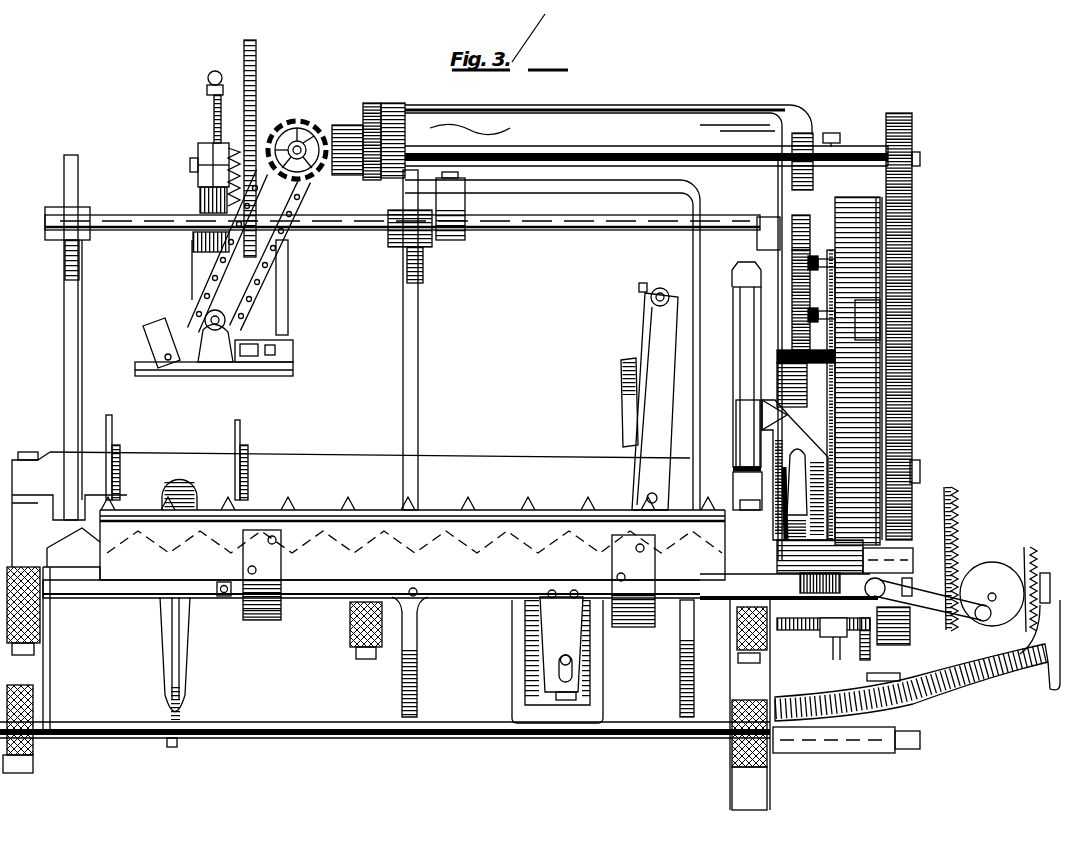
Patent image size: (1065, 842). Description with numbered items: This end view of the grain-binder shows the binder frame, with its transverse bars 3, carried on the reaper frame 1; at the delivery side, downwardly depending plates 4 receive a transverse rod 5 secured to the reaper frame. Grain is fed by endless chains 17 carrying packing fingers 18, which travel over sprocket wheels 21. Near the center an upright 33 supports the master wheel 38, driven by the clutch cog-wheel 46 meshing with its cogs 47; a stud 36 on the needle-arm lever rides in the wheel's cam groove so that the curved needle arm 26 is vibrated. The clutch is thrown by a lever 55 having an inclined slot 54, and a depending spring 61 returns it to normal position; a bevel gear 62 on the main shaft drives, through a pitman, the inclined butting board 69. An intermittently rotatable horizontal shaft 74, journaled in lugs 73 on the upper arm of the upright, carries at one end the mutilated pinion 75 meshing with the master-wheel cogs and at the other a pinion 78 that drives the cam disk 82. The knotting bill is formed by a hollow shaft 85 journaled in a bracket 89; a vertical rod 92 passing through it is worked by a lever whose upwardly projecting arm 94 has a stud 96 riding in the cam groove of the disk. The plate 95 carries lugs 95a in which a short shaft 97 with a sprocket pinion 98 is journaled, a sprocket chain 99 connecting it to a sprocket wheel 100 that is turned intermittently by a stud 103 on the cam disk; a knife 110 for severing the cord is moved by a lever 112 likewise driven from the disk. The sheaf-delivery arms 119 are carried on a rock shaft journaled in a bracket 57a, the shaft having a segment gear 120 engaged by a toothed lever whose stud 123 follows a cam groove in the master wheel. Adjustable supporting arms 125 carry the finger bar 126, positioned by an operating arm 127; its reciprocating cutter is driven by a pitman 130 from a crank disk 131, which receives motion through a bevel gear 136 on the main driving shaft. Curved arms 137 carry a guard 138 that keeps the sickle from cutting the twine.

The reaper frame 1 is at (35, 766).
The transverse bars 3 is at (43, 628).
The downwardly depending plates 4 is at (50, 690).
The transverse rod 5 is at (385, 743).
The endless chains 17 is at (118, 460).
The packing fingers 18 is at (236, 435).
The sprocket wheels 21 is at (795, 312).
The needle arm 26 is at (189, 658).
The upright 33 is at (733, 365).
The outwardly extending stud 36 is at (821, 281).
The master wheel 38 is at (872, 322).
The cog-wheel 46 is at (882, 635).
The cogs 47 is at (884, 284).
The inclined slot 54 is at (770, 488).
The lever 55 is at (795, 470).
The bracket 57a is at (458, 206).
The depending spring 61 is at (741, 428).
The bevel gear 62 is at (1030, 577).
The butting board 69 is at (627, 408).
The lugs 73 is at (384, 112).
The horizontal shaft 74 is at (672, 135).
The interrupted or mutilated pinion 75 is at (913, 326).
The pinion 78 is at (336, 177).
The cam wheel or disk 82 is at (242, 113).
The hollow shaft or rod 85 is at (199, 198).
The bracket 89 is at (190, 166).
The vertical rod 92 is at (228, 140).
The short upwardly projecting arm 94 is at (210, 74).
The plate 95 is at (172, 376).
The lugs 95a is at (228, 368).
The stud 96 is at (245, 75).
The short shaft 97 is at (250, 323).
The sprocket pinion 98 is at (203, 322).
The sprocket chain 99 is at (277, 289).
The sprocket wheel 100 is at (308, 138).
The stud 103 is at (258, 130).
The knife or cutter 110 is at (160, 343).
The lever 112 is at (290, 253).
The delivery arms 119 is at (241, 337).
The segment gear 120 is at (796, 229).
The stud 123 is at (824, 333).
The supporting arms 125 is at (420, 702).
The finger bar 126 is at (412, 497).
The operating arm 127 is at (566, 700).
The pitman 130 is at (934, 608).
The crank disk or wheel 131 is at (992, 593).
The bevel gear 136 is at (953, 520).
The curved arms 137 is at (262, 622).
The guard 138 is at (414, 553).